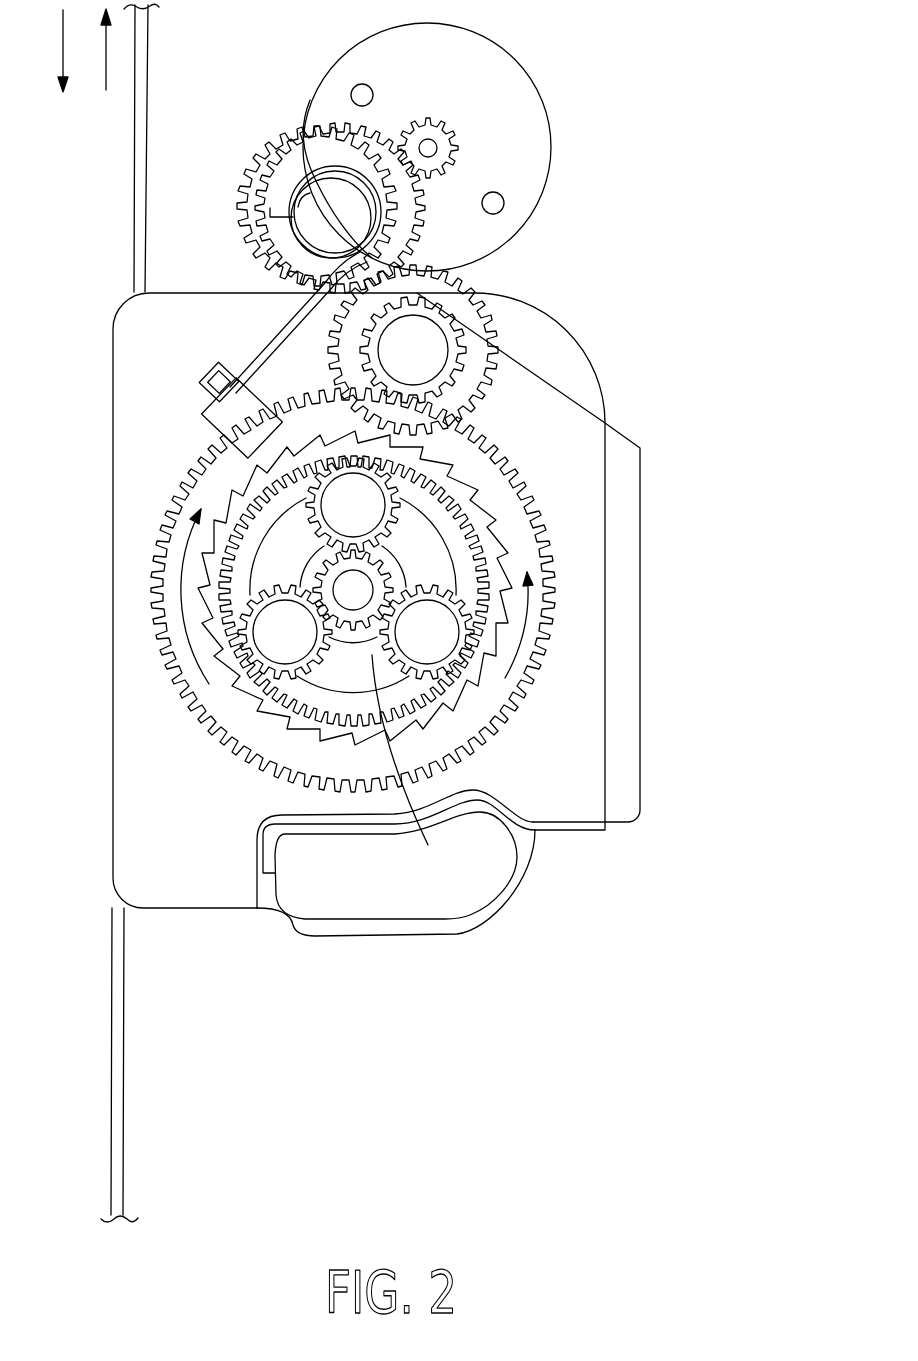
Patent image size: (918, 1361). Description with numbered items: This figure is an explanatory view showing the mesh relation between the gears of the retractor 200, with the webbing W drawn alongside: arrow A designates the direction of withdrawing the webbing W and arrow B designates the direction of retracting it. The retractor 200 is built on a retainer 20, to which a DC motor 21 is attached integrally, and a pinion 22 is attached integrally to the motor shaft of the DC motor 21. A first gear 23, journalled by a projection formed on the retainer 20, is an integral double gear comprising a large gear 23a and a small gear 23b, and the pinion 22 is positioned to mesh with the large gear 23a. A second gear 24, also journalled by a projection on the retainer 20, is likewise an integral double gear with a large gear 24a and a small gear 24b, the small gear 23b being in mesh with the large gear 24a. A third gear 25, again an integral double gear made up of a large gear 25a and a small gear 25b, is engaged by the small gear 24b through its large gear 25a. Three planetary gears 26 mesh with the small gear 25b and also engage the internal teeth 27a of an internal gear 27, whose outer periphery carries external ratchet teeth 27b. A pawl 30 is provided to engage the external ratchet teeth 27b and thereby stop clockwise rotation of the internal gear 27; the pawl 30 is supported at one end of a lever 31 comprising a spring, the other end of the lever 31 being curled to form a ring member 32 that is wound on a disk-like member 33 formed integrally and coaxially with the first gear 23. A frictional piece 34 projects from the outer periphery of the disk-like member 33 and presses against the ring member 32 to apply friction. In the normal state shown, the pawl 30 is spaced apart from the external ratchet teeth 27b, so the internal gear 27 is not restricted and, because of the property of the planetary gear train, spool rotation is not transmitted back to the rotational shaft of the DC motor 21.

The retainer 20 is at (200, 893).
The DC motor 21 is at (553, 123).
The pinion 22 is at (452, 155).
The first gear 23 is at (458, 213).
The large gear 23a is at (423, 187).
The small gear 23b is at (423, 257).
The second gear 24 is at (451, 350).
The large gear 24a is at (498, 304).
The small gear 24b is at (463, 388).
The third gear 25 is at (415, 590).
The large gear 25a is at (503, 467).
The small gear 25b is at (397, 570).
The planetary gears 26 is at (433, 645).
The internal gear 27 is at (397, 703).
The internal teeth 27a is at (400, 727).
The external ratchet teeth 27b is at (409, 769).
The pawl 30 is at (206, 372).
The lever 31 is at (257, 352).
The ring member 32 is at (330, 167).
The disk-like member 33 is at (273, 193).
The frictional piece 34 is at (287, 300).
The retractor 200 is at (359, 613).
The webbing W is at (140, 75).
The arrow A is at (116, 49).
The arrow B is at (54, 51).